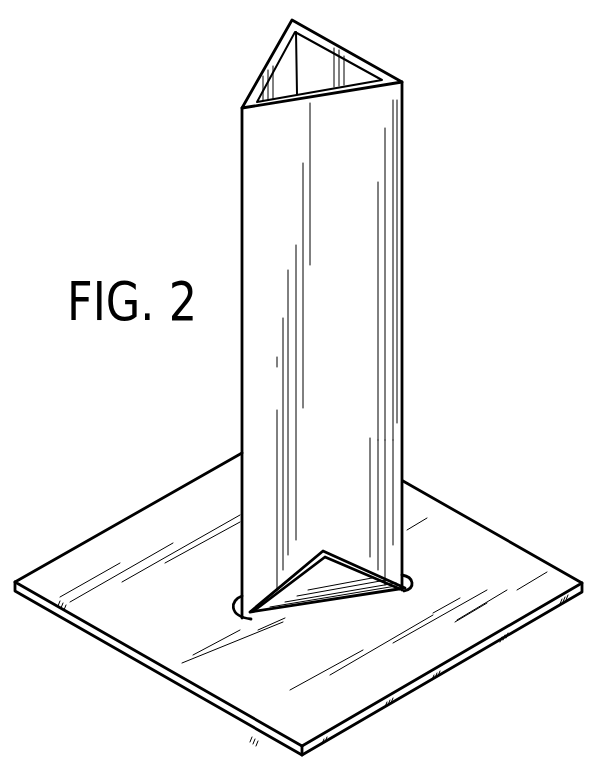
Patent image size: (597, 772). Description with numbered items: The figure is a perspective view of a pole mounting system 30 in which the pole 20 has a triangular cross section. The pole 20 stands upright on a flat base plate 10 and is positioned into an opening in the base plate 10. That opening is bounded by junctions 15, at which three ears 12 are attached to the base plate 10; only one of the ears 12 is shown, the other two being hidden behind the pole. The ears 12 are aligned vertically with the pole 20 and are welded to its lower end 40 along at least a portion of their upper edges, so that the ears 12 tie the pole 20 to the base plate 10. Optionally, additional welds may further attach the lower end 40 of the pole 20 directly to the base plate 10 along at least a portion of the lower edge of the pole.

The base plate 10 is at (443, 528).
The ears 12 is at (343, 578).
The junctions 15 is at (315, 610).
The pole 20 is at (350, 240).
The pole mounting system 30 is at (373, 175).
The lower end 40 is at (372, 537).